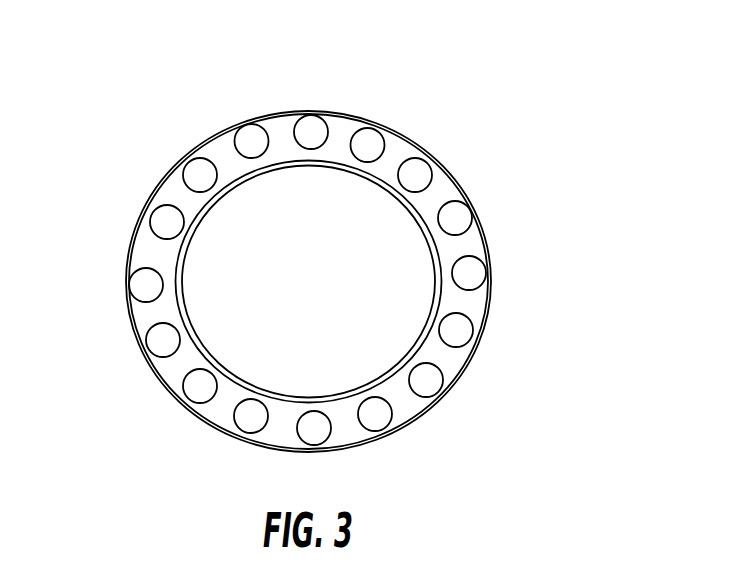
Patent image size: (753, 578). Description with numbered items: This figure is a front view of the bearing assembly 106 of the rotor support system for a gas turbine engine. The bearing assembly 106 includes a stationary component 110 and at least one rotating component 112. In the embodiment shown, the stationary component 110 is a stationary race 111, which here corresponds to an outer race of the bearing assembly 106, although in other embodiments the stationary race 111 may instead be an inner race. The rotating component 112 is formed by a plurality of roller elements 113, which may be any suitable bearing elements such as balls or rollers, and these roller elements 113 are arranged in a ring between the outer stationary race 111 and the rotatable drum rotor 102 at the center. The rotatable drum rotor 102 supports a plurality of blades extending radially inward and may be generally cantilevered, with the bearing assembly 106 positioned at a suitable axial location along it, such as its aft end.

The bearing assembly 106 is at (121, 124).
The stationary component 110 is at (460, 177).
The stationary race 111 is at (308, 281).
The rotatable drum rotor 102 is at (327, 292).
The rotating component 112 is at (456, 219).
The roller elements 113 is at (469, 273).